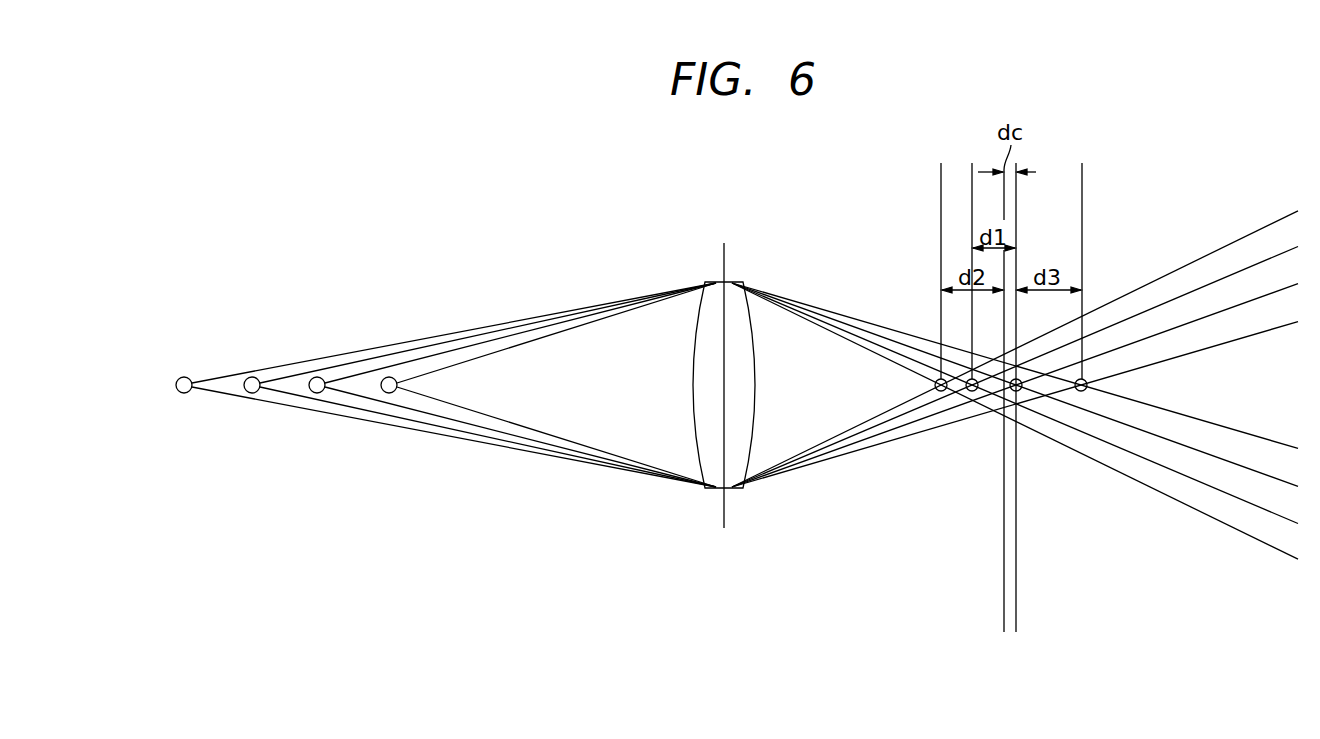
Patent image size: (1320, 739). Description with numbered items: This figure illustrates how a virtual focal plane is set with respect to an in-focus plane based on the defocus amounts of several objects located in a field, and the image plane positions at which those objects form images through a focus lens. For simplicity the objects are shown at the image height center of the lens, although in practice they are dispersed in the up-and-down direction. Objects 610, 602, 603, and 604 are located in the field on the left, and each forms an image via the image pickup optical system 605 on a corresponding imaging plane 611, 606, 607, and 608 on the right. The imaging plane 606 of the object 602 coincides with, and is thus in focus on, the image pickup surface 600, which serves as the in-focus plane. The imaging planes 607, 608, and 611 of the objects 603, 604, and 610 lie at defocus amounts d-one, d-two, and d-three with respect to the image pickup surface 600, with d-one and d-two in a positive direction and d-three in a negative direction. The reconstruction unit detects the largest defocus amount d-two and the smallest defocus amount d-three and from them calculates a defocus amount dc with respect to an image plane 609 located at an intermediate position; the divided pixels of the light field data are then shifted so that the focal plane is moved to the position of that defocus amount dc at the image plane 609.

The image pickup surface 600 is at (1017, 606).
The object 602 is at (317, 377).
The object 603 is at (252, 377).
The object 604 is at (184, 377).
The image pickup optical system 605 is at (692, 345).
The imaging plane 606 is at (1018, 391).
The imaging plane 607 is at (972, 391).
The imaging plane 608 is at (934, 385).
The image plane 609 is at (1003, 606).
The object 610 is at (389, 377).
The imaging plane 611 is at (1087, 386).